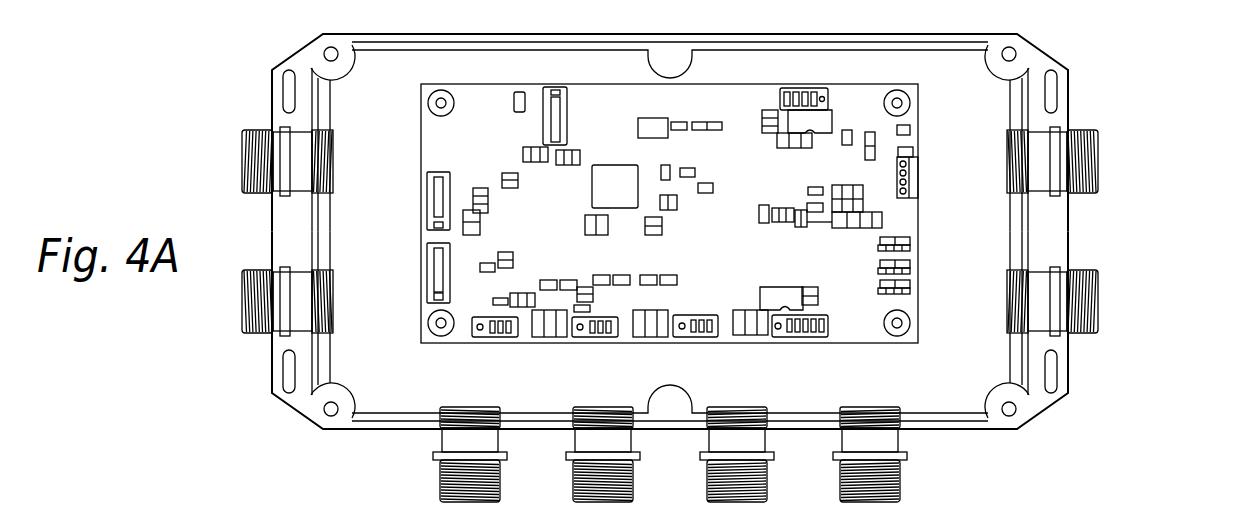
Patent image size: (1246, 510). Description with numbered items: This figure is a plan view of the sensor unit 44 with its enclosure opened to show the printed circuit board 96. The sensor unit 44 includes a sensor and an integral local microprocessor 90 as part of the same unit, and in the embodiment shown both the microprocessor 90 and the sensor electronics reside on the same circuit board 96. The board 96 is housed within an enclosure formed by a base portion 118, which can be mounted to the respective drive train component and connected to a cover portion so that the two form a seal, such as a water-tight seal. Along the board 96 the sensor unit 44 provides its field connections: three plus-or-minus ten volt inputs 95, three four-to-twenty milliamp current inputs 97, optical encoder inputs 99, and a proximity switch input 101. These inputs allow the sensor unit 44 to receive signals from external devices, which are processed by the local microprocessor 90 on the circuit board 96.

The sensor unit 44 is at (1172, 129).
The base portion 118 is at (266, 95).
The circuit board 96 is at (905, 217).
The microprocessor 90 is at (613, 168).
The optical encoder inputs 99 is at (808, 88).
The proximity switch input 101 is at (918, 178).
The current inputs 97 is at (490, 340).
The voltage inputs 95 is at (798, 340).